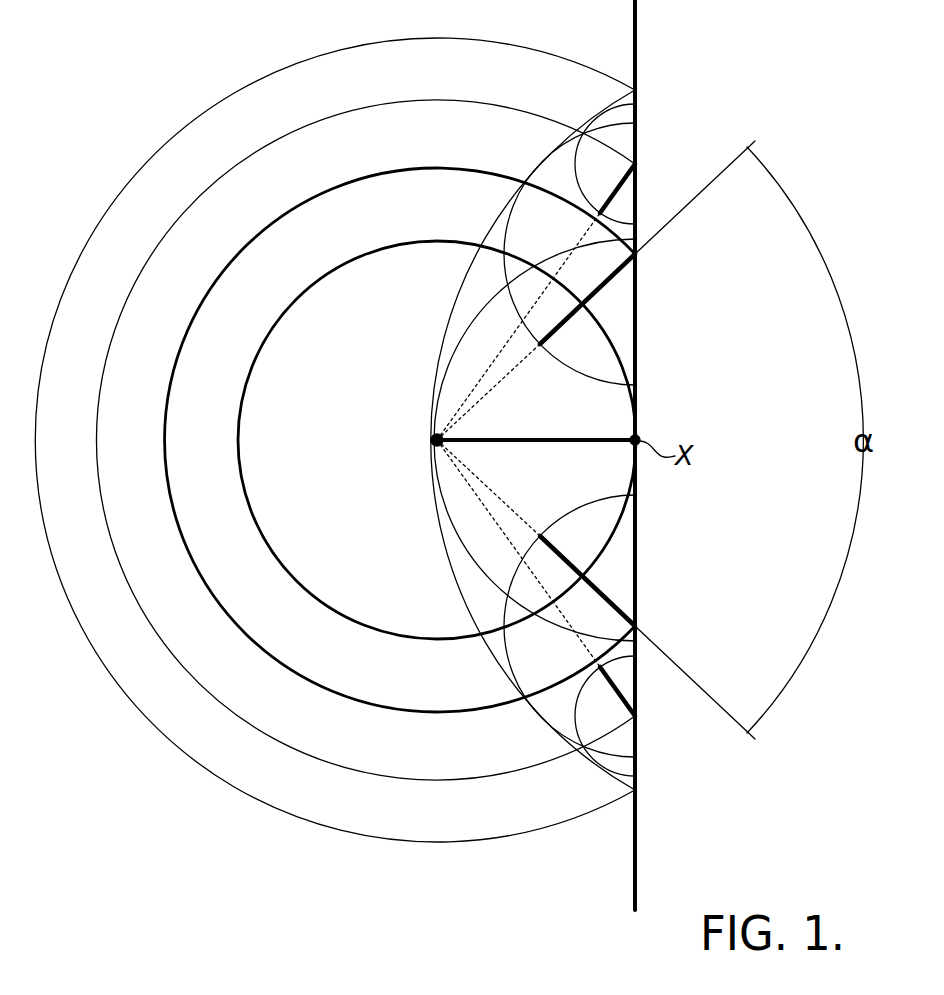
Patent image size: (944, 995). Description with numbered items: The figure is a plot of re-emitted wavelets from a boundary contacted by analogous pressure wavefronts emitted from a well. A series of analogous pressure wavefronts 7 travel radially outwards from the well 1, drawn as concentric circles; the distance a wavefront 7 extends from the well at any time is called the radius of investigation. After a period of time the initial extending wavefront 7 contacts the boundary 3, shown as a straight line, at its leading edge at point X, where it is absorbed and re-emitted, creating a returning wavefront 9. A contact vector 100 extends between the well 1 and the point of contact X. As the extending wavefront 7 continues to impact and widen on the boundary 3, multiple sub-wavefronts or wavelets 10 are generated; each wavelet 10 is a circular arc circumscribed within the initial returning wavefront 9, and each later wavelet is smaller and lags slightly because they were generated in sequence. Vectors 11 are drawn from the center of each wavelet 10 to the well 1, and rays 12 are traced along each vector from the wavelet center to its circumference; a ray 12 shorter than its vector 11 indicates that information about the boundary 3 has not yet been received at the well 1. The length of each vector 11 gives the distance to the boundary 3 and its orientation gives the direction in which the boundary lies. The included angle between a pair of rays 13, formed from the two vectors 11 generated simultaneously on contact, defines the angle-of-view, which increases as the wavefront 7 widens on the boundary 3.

The well 1 is at (433, 440).
The boundary 3 is at (640, 21).
The pressure wavefronts 7 is at (303, 292).
The returning wavefront 9 is at (480, 248).
The wavelets 10 is at (578, 166).
The vectors 11 is at (462, 405).
The rays 12 is at (477, 441).
The pair of rays 13 is at (562, 560).
The contact vector 100 is at (643, 413).